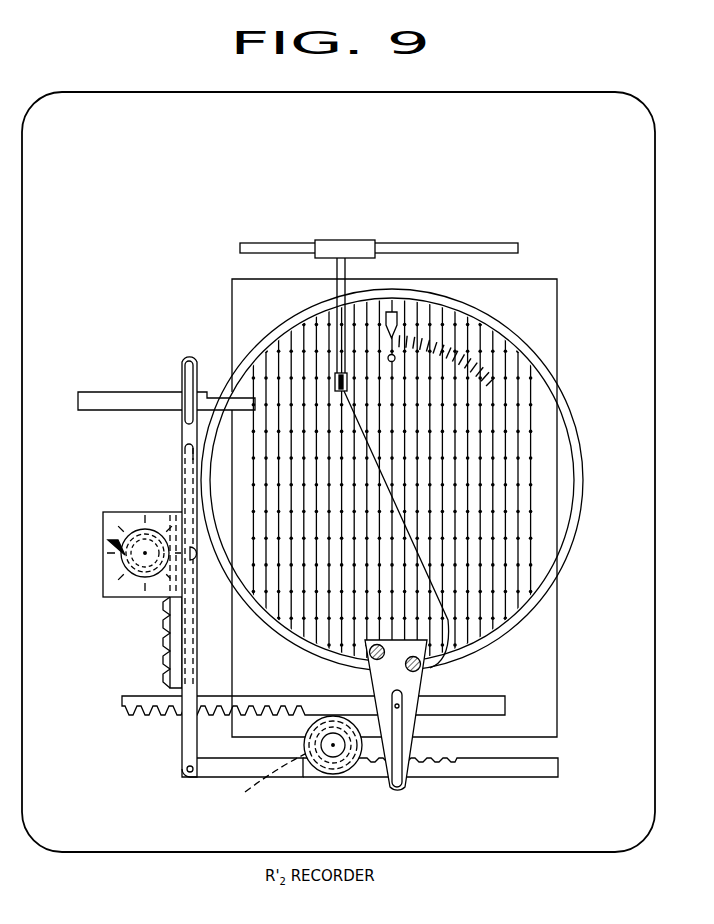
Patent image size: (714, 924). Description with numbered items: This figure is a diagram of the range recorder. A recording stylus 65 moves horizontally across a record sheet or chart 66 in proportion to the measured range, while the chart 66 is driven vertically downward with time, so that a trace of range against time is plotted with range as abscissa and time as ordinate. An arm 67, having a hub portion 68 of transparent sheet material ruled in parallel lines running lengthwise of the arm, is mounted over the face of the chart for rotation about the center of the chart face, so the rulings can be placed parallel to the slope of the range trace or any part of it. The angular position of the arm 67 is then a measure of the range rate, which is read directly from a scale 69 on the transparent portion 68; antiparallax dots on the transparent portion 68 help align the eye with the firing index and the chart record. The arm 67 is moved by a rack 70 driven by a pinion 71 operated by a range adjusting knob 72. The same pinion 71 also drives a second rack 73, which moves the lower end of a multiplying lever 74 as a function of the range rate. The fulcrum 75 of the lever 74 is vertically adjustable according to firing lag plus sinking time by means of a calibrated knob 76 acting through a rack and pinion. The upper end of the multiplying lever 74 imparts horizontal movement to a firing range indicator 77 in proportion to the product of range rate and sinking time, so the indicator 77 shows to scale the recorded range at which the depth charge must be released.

The recording stylus 65 is at (338, 377).
The record sheet or chart 66 is at (540, 632).
The arm 67 is at (412, 695).
The hub portion 68 is at (540, 440).
The scale 69 is at (447, 340).
The rack 70 is at (142, 712).
The pinion 71 is at (273, 780).
The range adjusting knob 72 is at (338, 775).
The rack 73 is at (465, 770).
The multiplying lever 74 is at (188, 742).
The fulcrum 75 is at (194, 558).
The calibrated knob 76 is at (130, 568).
The firing range indicator 77 is at (252, 395).